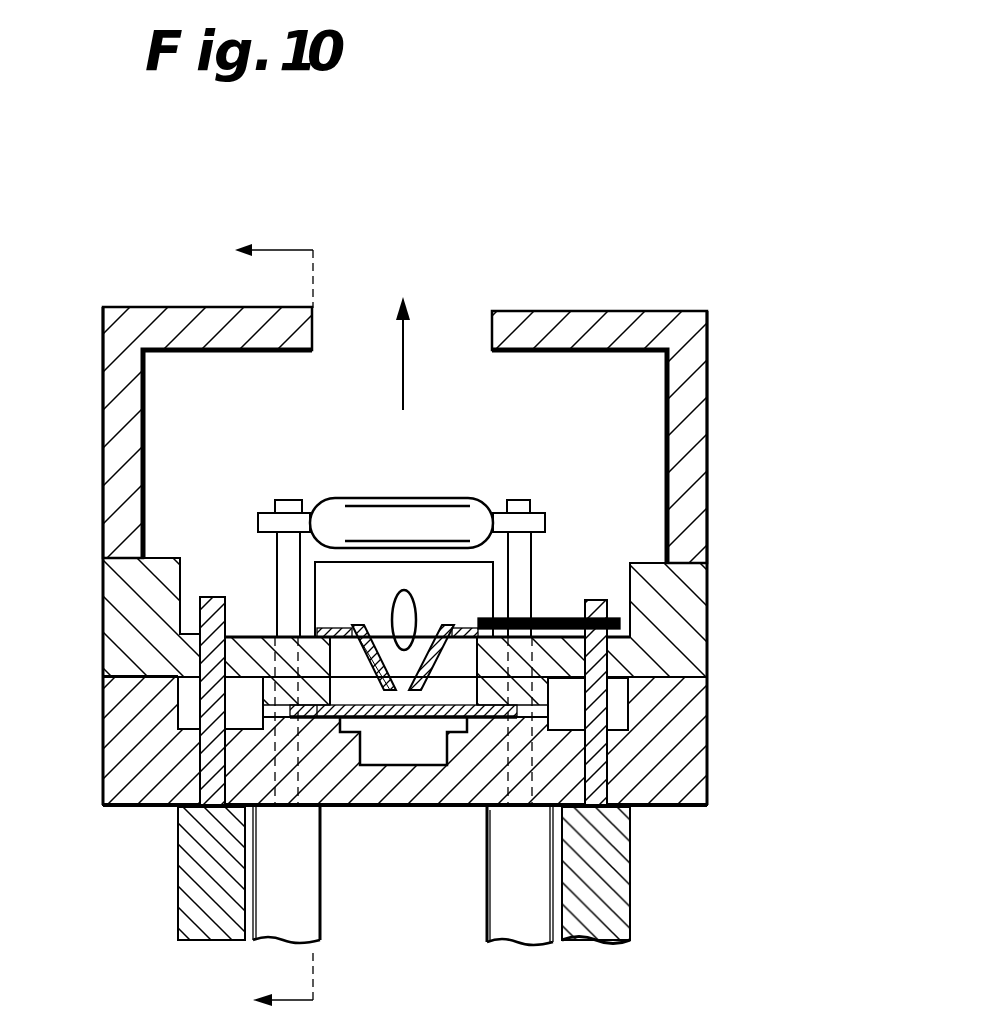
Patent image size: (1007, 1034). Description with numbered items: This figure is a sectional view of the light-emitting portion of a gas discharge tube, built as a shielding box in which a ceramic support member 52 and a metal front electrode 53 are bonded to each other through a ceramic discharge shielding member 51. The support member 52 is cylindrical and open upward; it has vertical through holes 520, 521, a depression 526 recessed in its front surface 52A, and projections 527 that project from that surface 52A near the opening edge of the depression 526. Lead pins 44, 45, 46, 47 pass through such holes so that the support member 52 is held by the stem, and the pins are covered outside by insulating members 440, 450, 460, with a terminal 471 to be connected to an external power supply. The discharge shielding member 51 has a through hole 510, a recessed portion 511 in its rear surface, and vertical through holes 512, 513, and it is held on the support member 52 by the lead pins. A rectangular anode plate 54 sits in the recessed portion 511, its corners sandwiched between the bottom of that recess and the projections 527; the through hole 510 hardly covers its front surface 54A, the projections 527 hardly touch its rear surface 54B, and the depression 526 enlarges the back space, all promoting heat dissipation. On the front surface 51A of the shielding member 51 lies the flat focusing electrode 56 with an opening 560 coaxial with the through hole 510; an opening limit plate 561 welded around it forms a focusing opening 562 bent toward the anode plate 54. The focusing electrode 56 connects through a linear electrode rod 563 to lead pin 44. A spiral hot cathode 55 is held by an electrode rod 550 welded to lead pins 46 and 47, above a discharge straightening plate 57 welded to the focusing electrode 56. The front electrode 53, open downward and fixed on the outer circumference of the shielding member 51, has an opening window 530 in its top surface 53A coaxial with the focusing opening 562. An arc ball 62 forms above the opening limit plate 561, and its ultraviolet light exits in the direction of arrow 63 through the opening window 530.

The front electrode 53 is at (700, 345).
The top surface of the front electrode 53A is at (584, 296).
The opening window 530 is at (320, 300).
The arrow 63 is at (408, 366).
The lead pin 47 is at (180, 590).
The lead pin 46 is at (620, 560).
The support member 52 is at (688, 792).
The front surface of the support member 52A is at (232, 714).
The projections 527 is at (290, 722).
The depression 526 is at (398, 748).
The vertical through hole 520 is at (640, 812).
The vertical through hole 521 is at (190, 790).
The discharge shielding member 51 is at (683, 585).
The vertical through hole 513 is at (180, 656).
The right plate portion 512 is at (615, 648).
The through hole 510 is at (560, 682).
The recessed portion 511 is at (545, 716).
The lead pin 45 is at (200, 622).
The lead pin 44 is at (607, 604).
The terminal 471 is at (215, 935).
The insulating member 440 is at (613, 897).
The insulating member 450 is at (215, 935).
The insulating member 460 is at (537, 920).
The rear surface of the anode plate 54B is at (488, 812).
The electrode rod 550 is at (258, 522).
The discharge straightening plate 57 is at (277, 590).
The hot cathode 55 is at (333, 502).
The focusing electrode 56 is at (497, 590).
The arc ball 62 is at (410, 590).
The anode plate 54 is at (403, 671).
The focusing opening 562 is at (430, 605).
The opening limit plate 561 is at (363, 665).
The front surface of the anode plate 54A is at (462, 735).
The opening 560 is at (317, 712).
The front surface of the discharge shielding member 51A is at (255, 620).
The electrode rod 563 is at (625, 620).